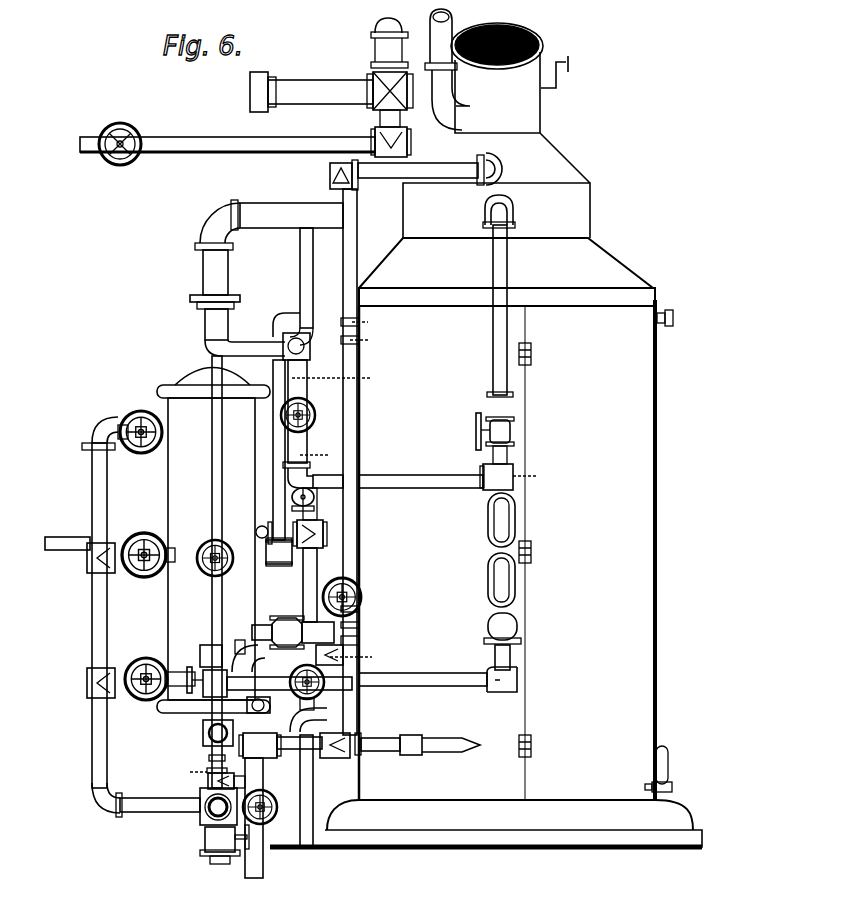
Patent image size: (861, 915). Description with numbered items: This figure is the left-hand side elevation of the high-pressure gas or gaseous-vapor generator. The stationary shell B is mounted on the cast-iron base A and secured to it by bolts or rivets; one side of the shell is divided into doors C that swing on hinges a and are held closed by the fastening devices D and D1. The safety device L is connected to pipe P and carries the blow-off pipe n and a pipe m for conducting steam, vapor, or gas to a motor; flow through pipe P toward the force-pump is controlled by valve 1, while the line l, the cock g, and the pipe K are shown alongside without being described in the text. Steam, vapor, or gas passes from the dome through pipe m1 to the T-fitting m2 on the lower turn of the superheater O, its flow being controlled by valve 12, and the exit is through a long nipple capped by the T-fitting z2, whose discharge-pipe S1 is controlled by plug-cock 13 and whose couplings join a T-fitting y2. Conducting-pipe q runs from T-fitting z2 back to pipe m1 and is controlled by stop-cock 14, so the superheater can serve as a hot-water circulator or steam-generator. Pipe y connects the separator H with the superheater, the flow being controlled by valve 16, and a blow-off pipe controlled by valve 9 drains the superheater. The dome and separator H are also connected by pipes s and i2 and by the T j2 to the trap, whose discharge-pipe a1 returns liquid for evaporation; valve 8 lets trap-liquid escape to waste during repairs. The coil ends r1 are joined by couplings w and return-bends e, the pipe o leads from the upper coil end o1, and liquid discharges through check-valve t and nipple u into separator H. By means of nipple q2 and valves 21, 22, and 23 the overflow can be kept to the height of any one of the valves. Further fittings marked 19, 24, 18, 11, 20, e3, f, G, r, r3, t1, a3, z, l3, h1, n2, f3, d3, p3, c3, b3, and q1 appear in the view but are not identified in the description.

The shell B is at (507, 411).
The doors C is at (398, 553).
The base A is at (486, 823).
The hinges a is at (534, 553).
The fastening device D is at (667, 769).
The fastening device D1 is at (674, 318).
The blow-off pipe n is at (447, 69).
The cock g is at (560, 72).
The supply pipe l is at (227, 135).
The valve 1 is at (120, 137).
The pipe m is at (311, 92).
The safety device L is at (390, 72).
The pipe P is at (395, 142).
The pipe m1 is at (416, 444).
The pipe K is at (266, 278).
The conducting-pipe q is at (301, 286).
The pipe s is at (320, 453).
The end of upper coil o1 is at (361, 340).
The valve 19 is at (307, 424).
The pipe e3 is at (387, 429).
The pipe o is at (234, 569).
The separator H is at (213, 541).
The valve 24 is at (227, 558).
The valve 21 is at (140, 439).
The valve 22 is at (144, 562).
The valve 23 is at (146, 685).
The nipple q2 is at (153, 621).
The discharge-pipe S1 is at (67, 536).
The plug-cock 13 is at (264, 525).
The coupling f is at (279, 552).
The stop-cock 14 is at (312, 504).
The T-fitting z2 is at (315, 534).
The valve 12 is at (355, 597).
The right and left couplings w is at (362, 613).
The ends of external turns r1 is at (361, 629).
The coupling G is at (362, 645).
The T-fitting y2 is at (351, 655).
The check-valve t is at (287, 632).
The coupling r is at (318, 595).
The nipple u is at (262, 632).
The pipe y is at (277, 688).
The coupling r3 is at (202, 656).
The valve t1 is at (199, 682).
The pipe a3 is at (289, 683).
The valve 18 is at (315, 687).
The valve 16 is at (251, 704).
The elbow 11 is at (308, 720).
The superheater O is at (203, 733).
The pipe i2 is at (209, 756).
The discharge-pipe a1 is at (200, 768).
The T-fitting j2 is at (211, 783).
The pipe z is at (260, 818).
The coupling l3 is at (260, 745).
The T-fitting m2 is at (335, 745).
The pipe h1 is at (377, 744).
The coupling n2 is at (411, 745).
The nozzle f3 is at (451, 745).
The pipe d3 is at (438, 668).
The pipe p3 is at (496, 295).
The valve 20 is at (486, 428).
The coupling c3 is at (515, 477).
The return-bend fittings e is at (501, 550).
The coupling b3 is at (502, 628).
The pipe q1 is at (298, 791).
The valve 9 is at (267, 808).
The valve 8 is at (226, 844).